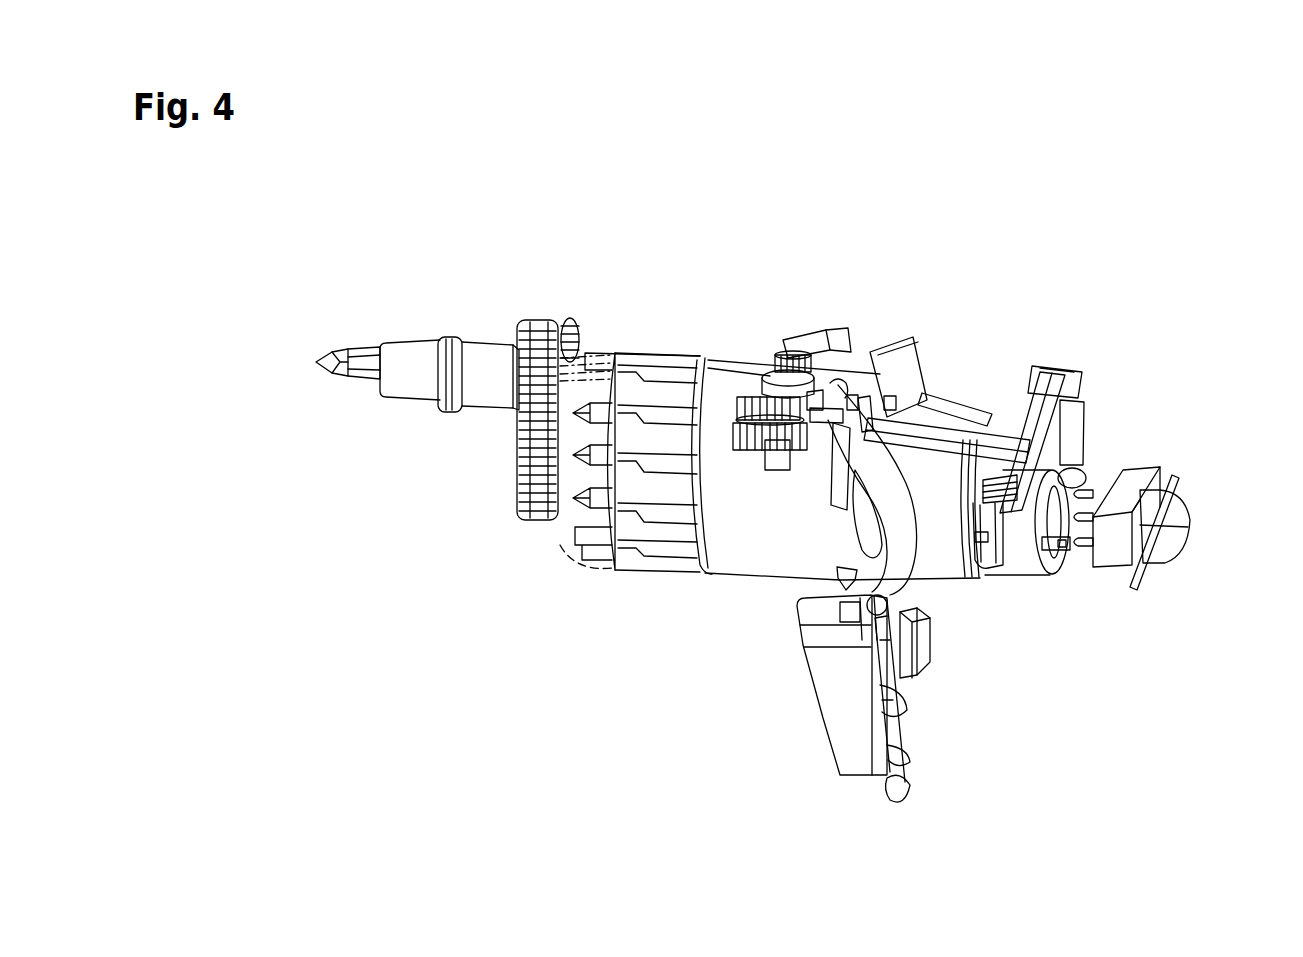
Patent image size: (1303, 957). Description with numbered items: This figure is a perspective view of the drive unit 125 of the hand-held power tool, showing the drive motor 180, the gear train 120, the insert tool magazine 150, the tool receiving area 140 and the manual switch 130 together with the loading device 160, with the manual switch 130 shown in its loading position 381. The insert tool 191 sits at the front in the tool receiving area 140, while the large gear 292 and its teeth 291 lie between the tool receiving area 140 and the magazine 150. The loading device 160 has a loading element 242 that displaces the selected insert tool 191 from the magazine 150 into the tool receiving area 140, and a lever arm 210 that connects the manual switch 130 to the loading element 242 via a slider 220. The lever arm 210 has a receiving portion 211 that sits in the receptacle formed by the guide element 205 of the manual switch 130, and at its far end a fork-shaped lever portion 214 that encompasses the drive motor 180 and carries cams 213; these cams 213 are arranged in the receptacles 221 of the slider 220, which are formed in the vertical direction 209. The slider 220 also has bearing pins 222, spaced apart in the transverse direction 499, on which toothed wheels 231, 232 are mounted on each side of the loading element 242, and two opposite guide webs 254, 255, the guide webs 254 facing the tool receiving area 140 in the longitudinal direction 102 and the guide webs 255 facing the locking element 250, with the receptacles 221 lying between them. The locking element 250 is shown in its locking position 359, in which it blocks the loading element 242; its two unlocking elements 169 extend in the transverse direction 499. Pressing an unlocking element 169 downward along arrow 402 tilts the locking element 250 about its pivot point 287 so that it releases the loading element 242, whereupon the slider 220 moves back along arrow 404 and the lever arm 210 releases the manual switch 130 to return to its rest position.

The longitudinal direction 102 is at (582, 828).
The gear train 120 is at (745, 563).
The drive unit 125 is at (483, 238).
The manual switch 130 is at (853, 750).
The tool receiving area 140 is at (420, 300).
The insert tool magazine 150 is at (618, 590).
The loading device 160 is at (980, 250).
The unlocking elements 169 is at (1047, 368).
The drive motor 180 is at (1024, 578).
The insert tool 191 is at (346, 349).
The guide element 205 is at (912, 663).
The vertical direction 209 is at (447, 688).
The lever arm 210 is at (860, 590).
The receiving portion 211 is at (890, 645).
The cams 213 is at (783, 447).
The lever portion 214 is at (938, 392).
The slider 220 is at (898, 345).
The receptacles 221 is at (873, 397).
The bearing pins 222 is at (816, 392).
The toothed wheel 231 is at (757, 400).
The toothed wheel 232 is at (747, 433).
The loading element 242 is at (575, 348).
The locking element 250 is at (1134, 486).
The guide webs 254 is at (826, 392).
The guide webs 255 is at (889, 398).
The pivot point 287 is at (1154, 532).
The gear teeth 291 is at (538, 490).
The spur gear 292 is at (546, 326).
The locking position 359 is at (1168, 448).
The loading position 381 is at (758, 806).
The arrow 402 is at (1070, 335).
The arrow 404 is at (780, 183).
The transverse direction 499 is at (968, 814).